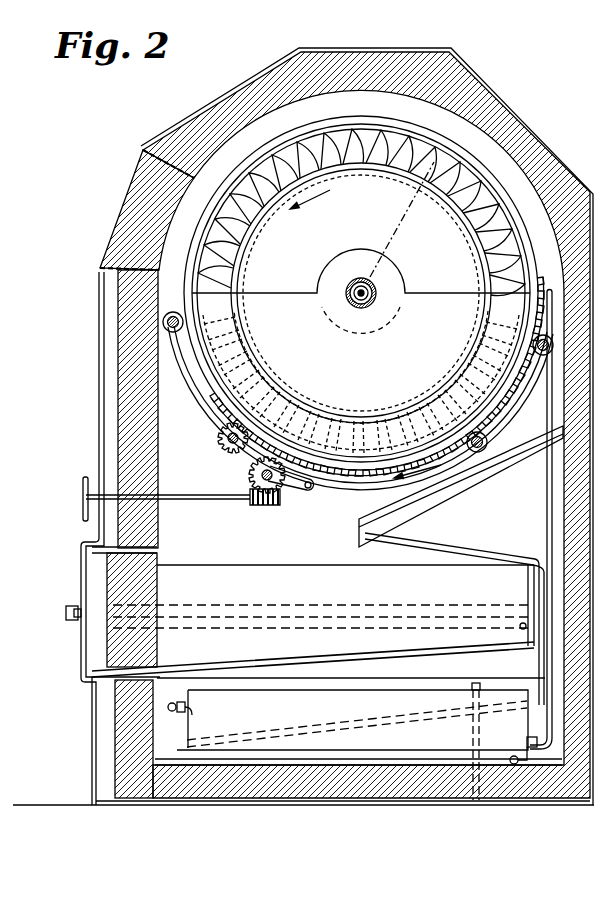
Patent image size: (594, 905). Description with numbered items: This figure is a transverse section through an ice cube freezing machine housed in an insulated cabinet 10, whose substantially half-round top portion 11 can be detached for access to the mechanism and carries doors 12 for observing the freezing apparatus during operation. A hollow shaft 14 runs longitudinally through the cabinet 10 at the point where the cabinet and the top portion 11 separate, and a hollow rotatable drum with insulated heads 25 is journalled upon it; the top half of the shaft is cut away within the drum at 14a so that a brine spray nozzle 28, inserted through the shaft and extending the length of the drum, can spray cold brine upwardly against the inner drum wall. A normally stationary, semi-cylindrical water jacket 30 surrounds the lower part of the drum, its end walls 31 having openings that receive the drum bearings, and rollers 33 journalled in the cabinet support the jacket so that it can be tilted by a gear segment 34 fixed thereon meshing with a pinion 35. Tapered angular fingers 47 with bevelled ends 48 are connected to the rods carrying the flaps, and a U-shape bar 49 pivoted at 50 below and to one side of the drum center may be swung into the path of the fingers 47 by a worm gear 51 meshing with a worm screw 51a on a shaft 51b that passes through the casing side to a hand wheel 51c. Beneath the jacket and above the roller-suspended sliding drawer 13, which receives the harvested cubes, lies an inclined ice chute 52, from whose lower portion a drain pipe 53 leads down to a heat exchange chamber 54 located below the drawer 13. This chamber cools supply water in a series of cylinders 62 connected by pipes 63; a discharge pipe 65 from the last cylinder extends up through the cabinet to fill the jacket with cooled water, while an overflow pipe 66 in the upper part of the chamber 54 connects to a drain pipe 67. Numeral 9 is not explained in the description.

The mounting bolt 9 is at (60, 610).
The cabinet 10 is at (118, 443).
The half-round top portion 11 is at (228, 107).
The doors 12 is at (132, 201).
The sliding drawer 13 is at (160, 582).
The hollow shaft 14 is at (378, 306).
The cut-away portion of hollow shaft 14a is at (363, 278).
The insulated heads 25 is at (361, 292).
The brine spray nozzle 28 is at (356, 312).
The water jacket 30 is at (345, 416).
The end walls of water jacket 31 is at (296, 300).
The rollers 33 is at (545, 356).
The gear segment 34 is at (520, 395).
The pinion 35 is at (224, 443).
The angular fingers 47 is at (268, 167).
The bevelled ends 48 is at (312, 143).
The U-shape bar 49 is at (298, 488).
The pivot 50 is at (261, 478).
The worm gear 51 is at (249, 466).
The worm screw 51a is at (263, 507).
The shaft 51b is at (193, 503).
The hand wheel 51c is at (82, 506).
The inclined ice chute 52 is at (466, 478).
The drain pipe 53 is at (463, 550).
The heat exchange chamber 54 is at (170, 727).
The cylinders 62 is at (282, 660).
The pipes 63 is at (180, 708).
The discharge pipe 65 is at (546, 520).
The overflow pipe 66 is at (478, 688).
The drain pipe 67 is at (519, 760).